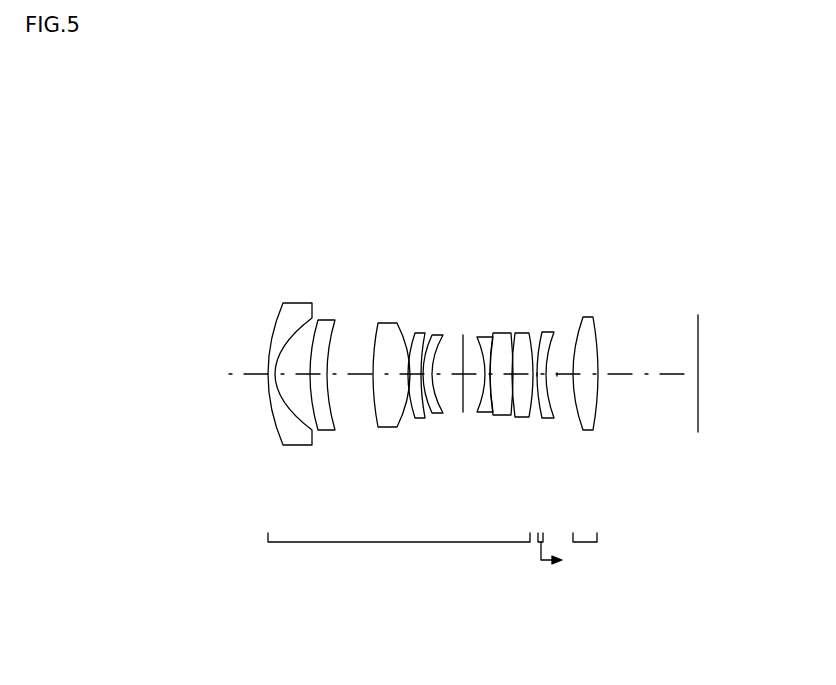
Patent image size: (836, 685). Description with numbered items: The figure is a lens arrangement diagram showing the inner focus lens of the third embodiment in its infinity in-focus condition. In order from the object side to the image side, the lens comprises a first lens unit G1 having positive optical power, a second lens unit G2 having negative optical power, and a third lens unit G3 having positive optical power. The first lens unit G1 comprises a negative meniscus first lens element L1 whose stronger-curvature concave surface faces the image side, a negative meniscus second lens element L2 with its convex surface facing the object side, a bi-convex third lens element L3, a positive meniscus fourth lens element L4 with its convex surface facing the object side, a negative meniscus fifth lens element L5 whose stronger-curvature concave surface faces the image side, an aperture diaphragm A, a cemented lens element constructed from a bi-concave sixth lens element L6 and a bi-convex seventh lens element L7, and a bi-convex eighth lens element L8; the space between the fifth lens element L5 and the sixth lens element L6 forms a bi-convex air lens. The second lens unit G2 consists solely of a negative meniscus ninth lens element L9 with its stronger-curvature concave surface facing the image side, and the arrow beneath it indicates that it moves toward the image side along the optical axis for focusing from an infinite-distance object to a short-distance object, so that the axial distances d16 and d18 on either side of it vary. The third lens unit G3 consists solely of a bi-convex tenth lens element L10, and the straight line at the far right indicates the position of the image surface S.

The first lens element L1 is at (295, 310).
The second lens element L2 is at (323, 325).
The third lens element L3 is at (387, 328).
The fourth lens element L4 is at (421, 333).
The fifth lens element L5 is at (436, 337).
The aperture diaphragm A is at (463, 335).
The sixth lens element L6 is at (485, 336).
The seventh lens element L7 is at (500, 337).
The eighth lens element L8 is at (522, 337).
The ninth lens element L9 is at (548, 335).
The tenth lens element L10 is at (590, 323).
The image surface S is at (698, 347).
The axial distance d16 is at (537, 375).
The axial distance d18 is at (557, 377).
The first lens unit G1 is at (399, 525).
The second lens unit G2 is at (538, 536).
The third lens unit G3 is at (597, 525).